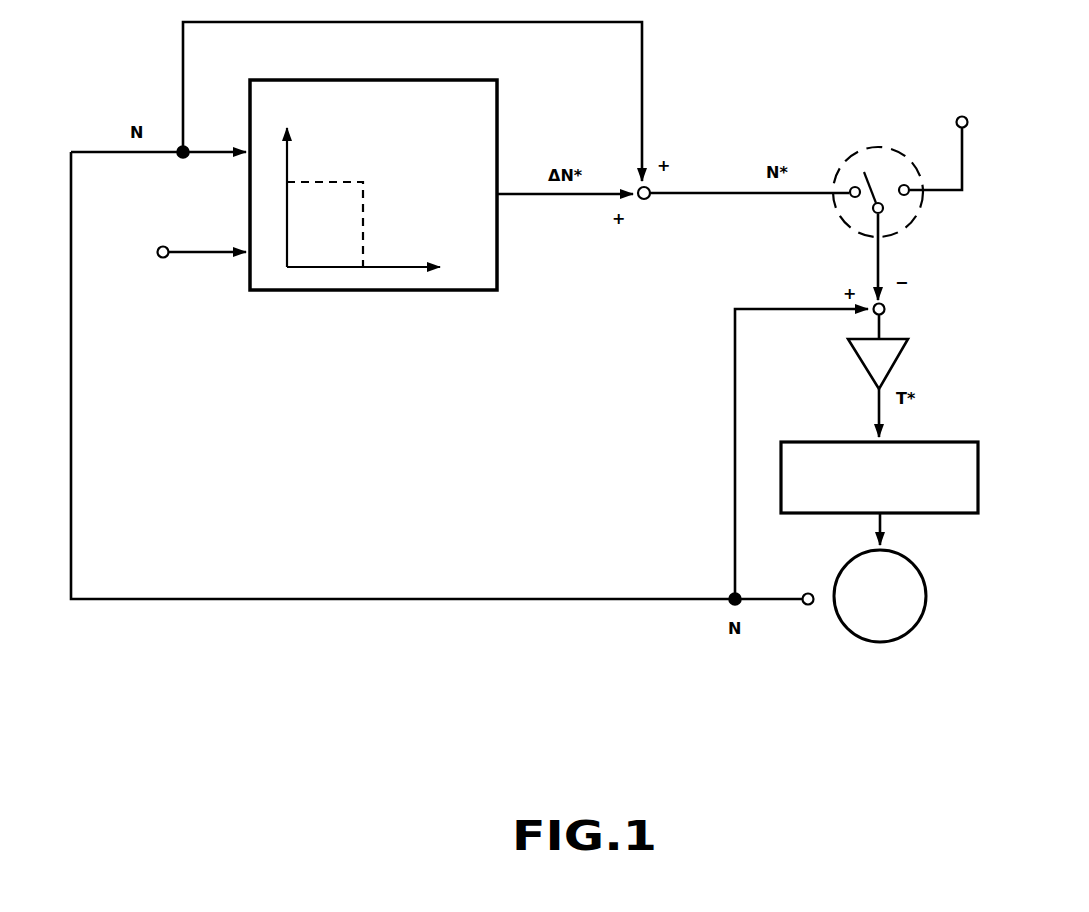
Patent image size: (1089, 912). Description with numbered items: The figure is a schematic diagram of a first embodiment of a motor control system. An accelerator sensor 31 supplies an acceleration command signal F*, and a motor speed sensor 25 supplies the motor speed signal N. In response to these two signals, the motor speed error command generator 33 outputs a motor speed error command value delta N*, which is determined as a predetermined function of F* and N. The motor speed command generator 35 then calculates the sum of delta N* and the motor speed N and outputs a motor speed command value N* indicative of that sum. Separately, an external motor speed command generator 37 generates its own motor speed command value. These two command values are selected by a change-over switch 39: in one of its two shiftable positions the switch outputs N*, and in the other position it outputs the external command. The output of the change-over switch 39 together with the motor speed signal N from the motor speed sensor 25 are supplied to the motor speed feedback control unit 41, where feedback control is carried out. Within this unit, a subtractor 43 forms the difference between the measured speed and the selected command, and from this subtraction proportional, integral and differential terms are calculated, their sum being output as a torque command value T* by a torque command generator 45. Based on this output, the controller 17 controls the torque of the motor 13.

The motor 13 is at (926, 600).
The controller 17 is at (978, 467).
The motor speed sensor 25 is at (806, 605).
The accelerator sensor 31 is at (163, 258).
The motor speed error command generator 33 is at (398, 291).
The motor speed command generator 35 is at (649, 198).
The external motor speed command generator 37 is at (968, 122).
The change-over switch 39 is at (876, 168).
The motor speed feedback control unit 41 is at (975, 336).
The subtractor 43 is at (885, 309).
The torque command generator 45 is at (900, 358).